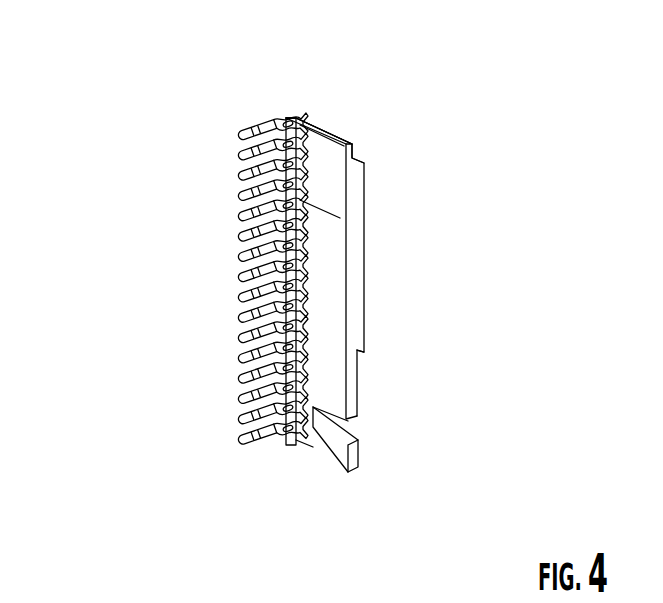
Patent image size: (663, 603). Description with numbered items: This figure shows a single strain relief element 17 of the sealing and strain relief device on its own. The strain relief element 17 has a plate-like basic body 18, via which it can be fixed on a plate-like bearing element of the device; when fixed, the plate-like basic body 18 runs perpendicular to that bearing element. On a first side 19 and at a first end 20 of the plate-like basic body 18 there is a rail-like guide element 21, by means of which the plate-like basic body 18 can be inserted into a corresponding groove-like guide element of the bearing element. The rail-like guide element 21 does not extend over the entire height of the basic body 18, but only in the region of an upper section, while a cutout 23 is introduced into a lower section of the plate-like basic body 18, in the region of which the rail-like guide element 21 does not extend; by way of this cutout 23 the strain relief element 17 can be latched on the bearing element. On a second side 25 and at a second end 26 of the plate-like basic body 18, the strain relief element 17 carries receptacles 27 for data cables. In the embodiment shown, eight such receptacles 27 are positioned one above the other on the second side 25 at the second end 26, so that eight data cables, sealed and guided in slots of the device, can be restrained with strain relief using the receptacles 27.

The strain relief element 17 is at (403, 109).
The plate-like basic body 18 is at (321, 241).
The first side 19 is at (365, 379).
The first end 20 is at (345, 486).
The rail-like guide element 21 is at (364, 292).
The cutout 23 is at (352, 434).
The second side 25 is at (328, 174).
The second end 26 is at (293, 116).
The receptacles 27 is at (237, 362).